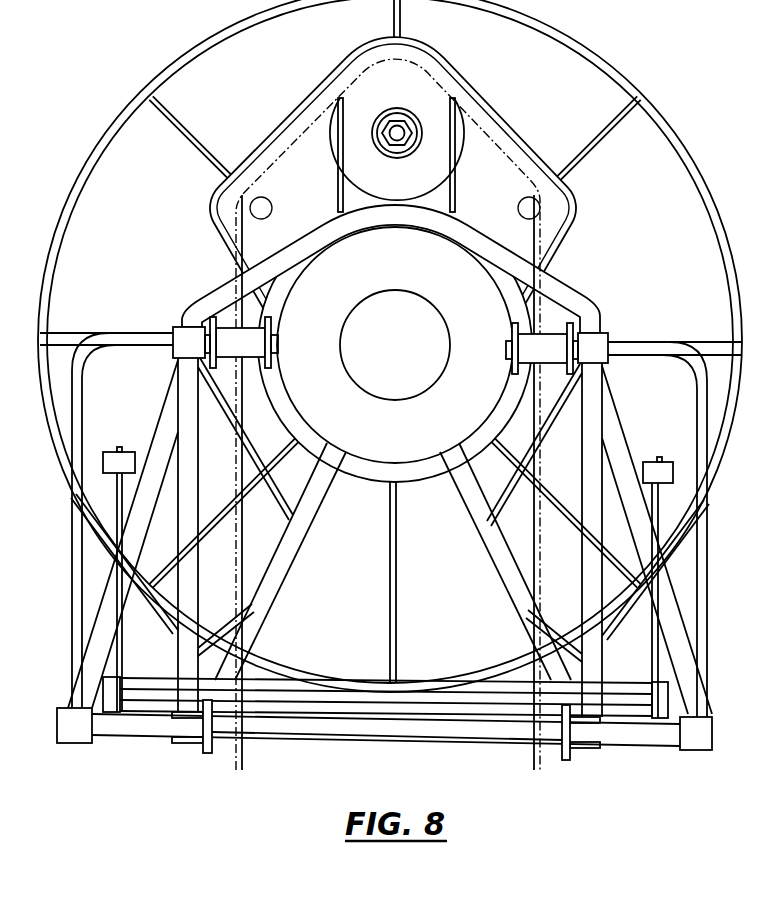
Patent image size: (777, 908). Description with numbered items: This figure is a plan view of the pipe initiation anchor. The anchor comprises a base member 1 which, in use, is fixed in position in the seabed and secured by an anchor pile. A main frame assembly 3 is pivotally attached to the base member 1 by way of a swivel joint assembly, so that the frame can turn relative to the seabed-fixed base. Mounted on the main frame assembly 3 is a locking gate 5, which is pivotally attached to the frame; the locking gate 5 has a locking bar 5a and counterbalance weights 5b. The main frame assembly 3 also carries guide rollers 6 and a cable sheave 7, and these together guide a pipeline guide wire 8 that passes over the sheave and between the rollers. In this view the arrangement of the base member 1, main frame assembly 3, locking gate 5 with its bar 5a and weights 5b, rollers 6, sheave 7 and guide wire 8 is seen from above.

The base member 1 is at (106, 134).
The main frame assembly 3 is at (200, 296).
The locking gate 5 is at (117, 590).
The locking bar 5a is at (320, 690).
The counterbalance weights 5b is at (123, 461).
The guide rollers 6 is at (247, 350).
The cable sheave 7 is at (373, 88).
The pipeline guide wire 8 is at (237, 567).